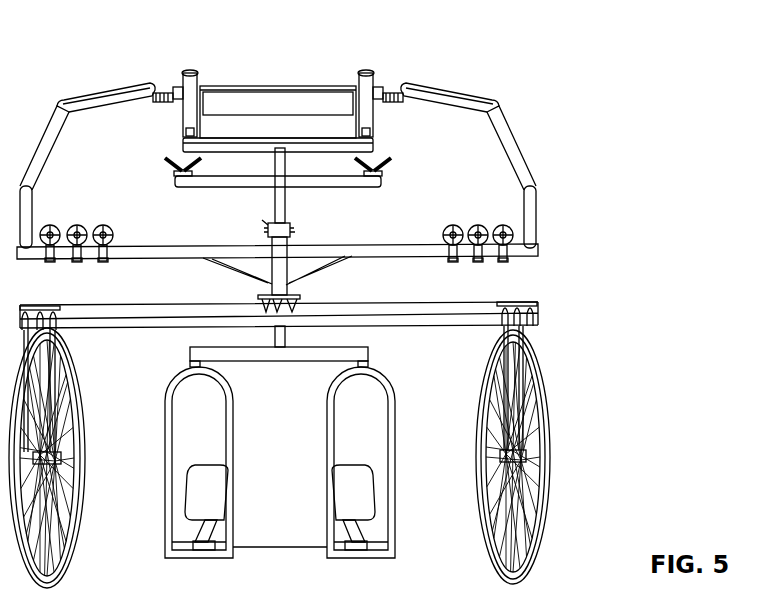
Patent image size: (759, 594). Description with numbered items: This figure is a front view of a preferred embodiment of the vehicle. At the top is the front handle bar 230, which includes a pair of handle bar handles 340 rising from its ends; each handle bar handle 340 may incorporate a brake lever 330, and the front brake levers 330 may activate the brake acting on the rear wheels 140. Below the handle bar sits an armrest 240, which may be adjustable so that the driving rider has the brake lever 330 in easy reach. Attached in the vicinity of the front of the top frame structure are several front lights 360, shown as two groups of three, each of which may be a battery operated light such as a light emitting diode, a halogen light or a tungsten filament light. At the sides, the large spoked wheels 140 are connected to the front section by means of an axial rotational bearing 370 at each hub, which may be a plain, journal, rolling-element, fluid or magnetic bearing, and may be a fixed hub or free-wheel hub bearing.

The wheel 140 is at (540, 522).
The front handle bar 230 is at (243, 147).
The armrest 240 is at (382, 155).
The brake lever 330 is at (384, 86).
The handle bar handle 340 is at (360, 72).
The front light 360 is at (515, 232).
The axial rotational bearing 370 is at (514, 455).